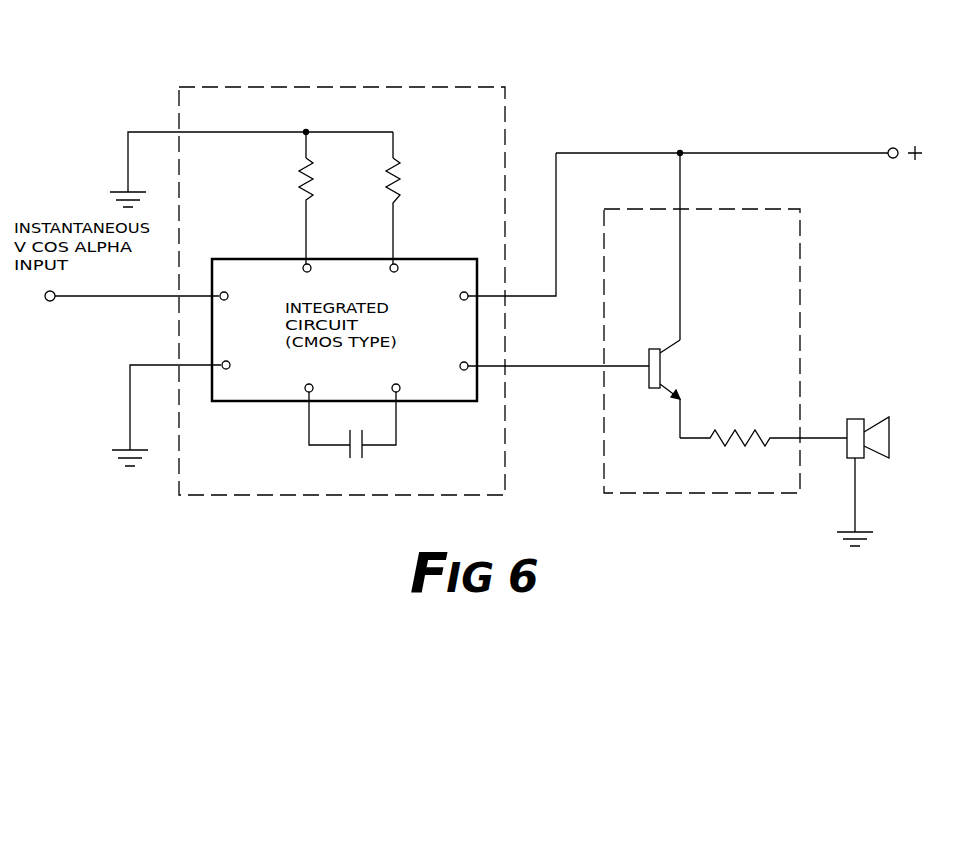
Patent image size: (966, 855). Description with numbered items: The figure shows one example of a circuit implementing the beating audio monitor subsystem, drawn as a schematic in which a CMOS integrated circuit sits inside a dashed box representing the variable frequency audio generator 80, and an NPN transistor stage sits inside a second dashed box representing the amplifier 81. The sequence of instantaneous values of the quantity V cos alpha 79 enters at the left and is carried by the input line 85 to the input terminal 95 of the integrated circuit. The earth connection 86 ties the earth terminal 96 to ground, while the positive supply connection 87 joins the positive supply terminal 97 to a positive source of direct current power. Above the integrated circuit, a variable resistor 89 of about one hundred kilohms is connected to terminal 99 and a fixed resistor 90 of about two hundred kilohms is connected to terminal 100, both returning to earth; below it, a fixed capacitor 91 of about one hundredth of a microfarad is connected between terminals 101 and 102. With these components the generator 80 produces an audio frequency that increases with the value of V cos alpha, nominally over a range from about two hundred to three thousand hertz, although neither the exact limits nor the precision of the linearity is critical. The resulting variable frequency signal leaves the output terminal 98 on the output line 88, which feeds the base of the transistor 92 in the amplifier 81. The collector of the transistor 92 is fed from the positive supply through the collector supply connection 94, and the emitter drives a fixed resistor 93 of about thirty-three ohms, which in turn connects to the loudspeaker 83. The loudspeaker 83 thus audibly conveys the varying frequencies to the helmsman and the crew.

The instantaneous values of V cos alpha 79 is at (36, 296).
The variable frequency audio generator 80 is at (435, 269).
The amplifier 81 is at (756, 351).
The loudspeaker 83 is at (901, 481).
The input line 85 is at (137, 287).
The earth connection 86 is at (166, 406).
The positive supply connection 87 is at (524, 224).
The output line 88 is at (558, 377).
The variable resistor 89 is at (406, 211).
The fixed resistor 90 is at (291, 211).
The fixed capacitor 91 is at (352, 429).
The transistor 92 is at (723, 389).
The fixed resistor 93 is at (763, 452).
The collector supply connection 94 is at (692, 246).
The input terminal 95 is at (228, 286).
The earth terminal 96 is at (228, 356).
The positive supply terminal 97 is at (461, 287).
The output terminal 98 is at (461, 356).
The terminal 99 is at (405, 272).
The terminal 100 is at (290, 272).
The terminal 101 is at (308, 378).
The terminal 102 is at (397, 378).